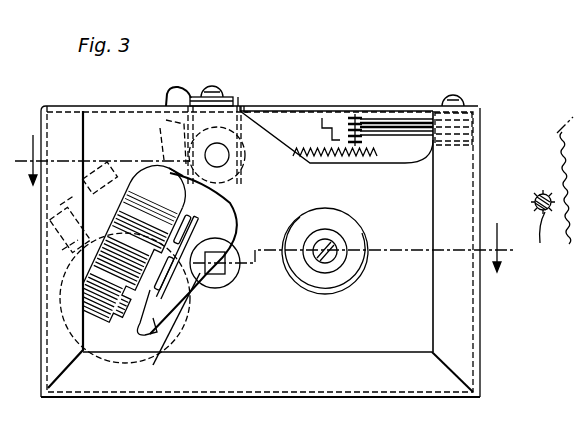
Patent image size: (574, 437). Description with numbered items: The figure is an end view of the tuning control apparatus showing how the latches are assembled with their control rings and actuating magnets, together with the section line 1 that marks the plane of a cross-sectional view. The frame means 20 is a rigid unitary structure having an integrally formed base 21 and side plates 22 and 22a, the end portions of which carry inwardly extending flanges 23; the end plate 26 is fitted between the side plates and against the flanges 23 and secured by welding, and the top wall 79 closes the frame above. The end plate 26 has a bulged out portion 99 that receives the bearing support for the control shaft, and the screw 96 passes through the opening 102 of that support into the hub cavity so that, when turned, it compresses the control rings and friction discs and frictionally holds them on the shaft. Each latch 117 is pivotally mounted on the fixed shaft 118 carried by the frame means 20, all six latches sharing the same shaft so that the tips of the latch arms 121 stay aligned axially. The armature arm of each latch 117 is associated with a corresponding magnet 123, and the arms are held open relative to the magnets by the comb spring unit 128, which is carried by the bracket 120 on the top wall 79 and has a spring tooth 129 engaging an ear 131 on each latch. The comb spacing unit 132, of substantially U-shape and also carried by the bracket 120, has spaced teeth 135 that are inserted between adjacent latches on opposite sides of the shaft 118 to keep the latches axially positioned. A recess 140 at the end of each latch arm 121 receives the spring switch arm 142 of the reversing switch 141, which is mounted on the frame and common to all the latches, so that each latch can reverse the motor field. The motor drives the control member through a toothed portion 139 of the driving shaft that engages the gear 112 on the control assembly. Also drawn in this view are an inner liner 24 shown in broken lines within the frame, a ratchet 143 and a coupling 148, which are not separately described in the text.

The section line 1- 1 is at (266, 202).
The frame means 20 is at (419, 106).
The base 21 is at (338, 398).
The side plate 22 is at (481, 165).
The side plate 22a is at (41, 112).
The inwardly extending flange 23 is at (338, 352).
The inner liner 24 is at (433, 236).
The end plate 26 is at (417, 302).
The top wall 79 is at (297, 106).
The screw 96 is at (334, 247).
The bulged out portion 99 is at (315, 284).
The opening 102 is at (338, 262).
The gear 112 is at (553, 180).
The latch 117 is at (180, 325).
The fixed shaft 118 is at (222, 164).
The bracket 120 is at (233, 102).
The latch arm 121 is at (273, 124).
The magnet 123 is at (101, 322).
The comb spring unit 128 is at (168, 92).
The spring tooth 129 is at (167, 124).
The ear 131 is at (172, 147).
The comb spacing unit 132 is at (244, 102).
The spaced teeth 135 is at (243, 170).
The toothed portion 139 is at (566, 248).
The recess 140 is at (322, 133).
The reversing switch 141 is at (390, 108).
The spring switch arm 142 is at (356, 131).
The ratchet 143 is at (354, 117).
The coupling 148 is at (233, 272).